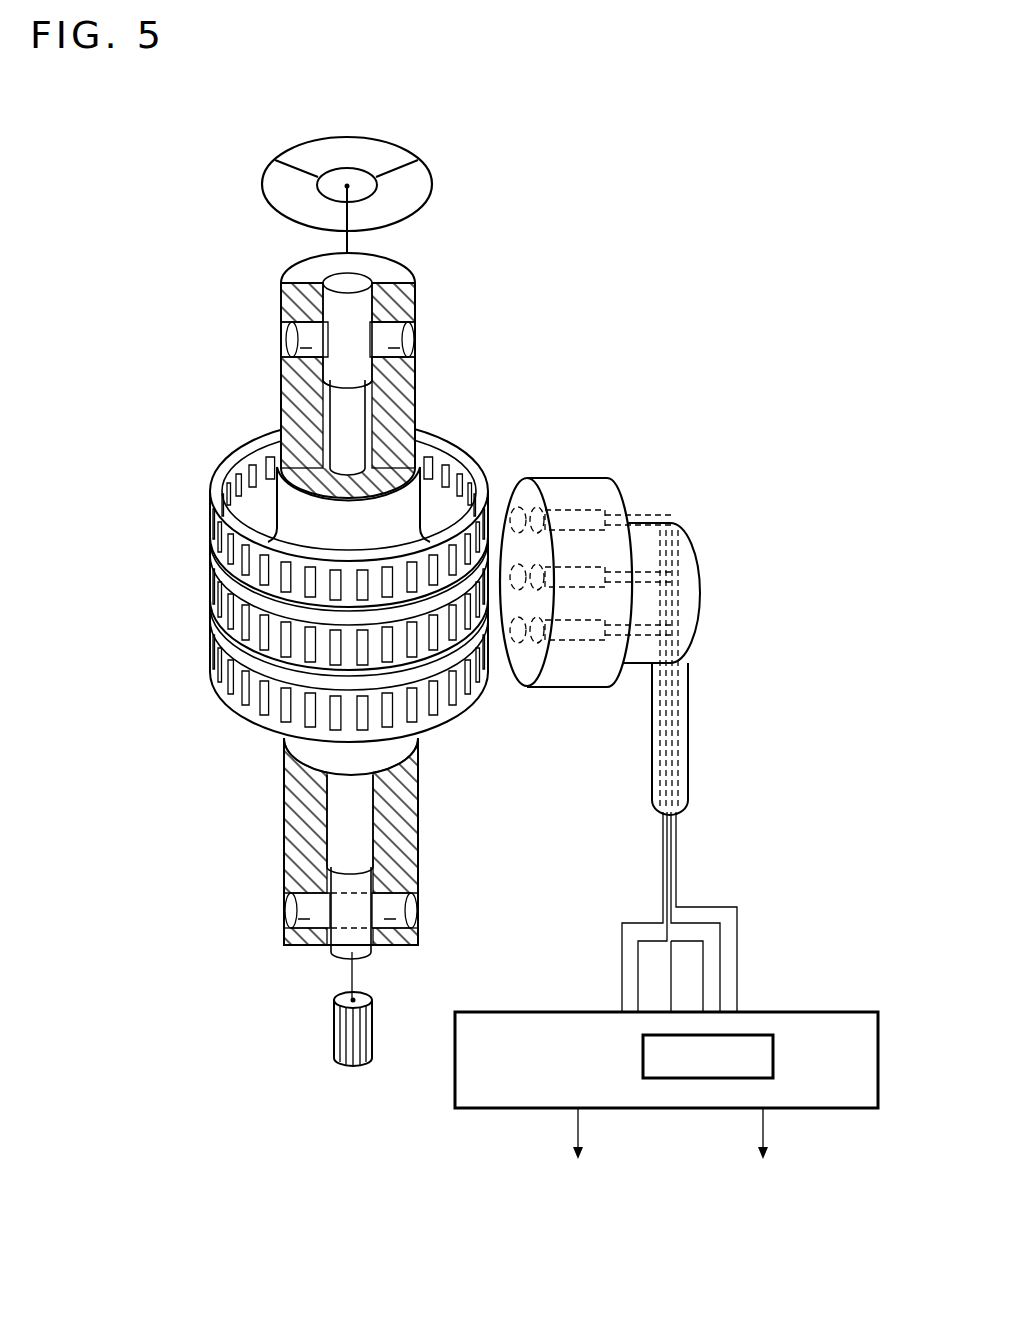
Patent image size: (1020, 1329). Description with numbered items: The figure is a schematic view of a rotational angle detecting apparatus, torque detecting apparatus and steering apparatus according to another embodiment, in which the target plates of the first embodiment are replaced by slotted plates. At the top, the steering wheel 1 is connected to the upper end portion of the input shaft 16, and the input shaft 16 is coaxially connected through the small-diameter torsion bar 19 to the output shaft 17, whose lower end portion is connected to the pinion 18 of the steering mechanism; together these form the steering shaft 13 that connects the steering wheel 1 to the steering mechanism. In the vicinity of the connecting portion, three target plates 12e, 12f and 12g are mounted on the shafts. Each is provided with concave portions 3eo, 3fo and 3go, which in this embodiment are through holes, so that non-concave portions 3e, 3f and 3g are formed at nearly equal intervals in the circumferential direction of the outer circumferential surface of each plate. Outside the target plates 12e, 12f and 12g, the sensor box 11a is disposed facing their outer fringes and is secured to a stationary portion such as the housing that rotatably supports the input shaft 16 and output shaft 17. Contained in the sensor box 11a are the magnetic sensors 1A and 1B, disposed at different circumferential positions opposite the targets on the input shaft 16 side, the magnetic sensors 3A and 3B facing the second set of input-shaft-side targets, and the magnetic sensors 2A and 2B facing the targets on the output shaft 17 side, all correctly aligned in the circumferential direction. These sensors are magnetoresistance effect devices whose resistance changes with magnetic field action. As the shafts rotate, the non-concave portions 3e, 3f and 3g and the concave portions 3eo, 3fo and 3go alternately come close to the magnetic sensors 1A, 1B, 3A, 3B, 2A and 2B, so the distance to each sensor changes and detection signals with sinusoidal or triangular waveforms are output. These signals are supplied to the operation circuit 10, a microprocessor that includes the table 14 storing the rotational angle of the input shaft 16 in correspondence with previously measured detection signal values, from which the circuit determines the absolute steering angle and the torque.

The steering wheel 1 is at (404, 146).
The steering shaft 13 is at (428, 310).
The input shaft 16 is at (404, 378).
The torsion bar 19 is at (340, 402).
The target plate 12e is at (262, 487).
The non-concave portions 3e is at (210, 527).
The concave portions 3eo is at (272, 568).
The target plate 12f is at (266, 607).
The non-concave portions 3f is at (262, 640).
The concave portions 3fo is at (250, 655).
The target plate 12g is at (245, 678).
The non-concave portions 3g is at (458, 692).
The concave portions 3go is at (270, 708).
The output shaft 17 is at (412, 833).
The pinion 18 is at (335, 1028).
The sensor box 11a is at (613, 492).
The magnetic sensor 1A is at (548, 482).
The magnetic sensor 1B is at (509, 483).
The magnetic sensor 3A is at (672, 585).
The magnetic sensor 3B is at (677, 570).
The magnetic sensor 2A is at (677, 628).
The magnetic sensor 2B is at (677, 612).
The operation circuit 10 is at (455, 1085).
The table 14 is at (775, 1058).